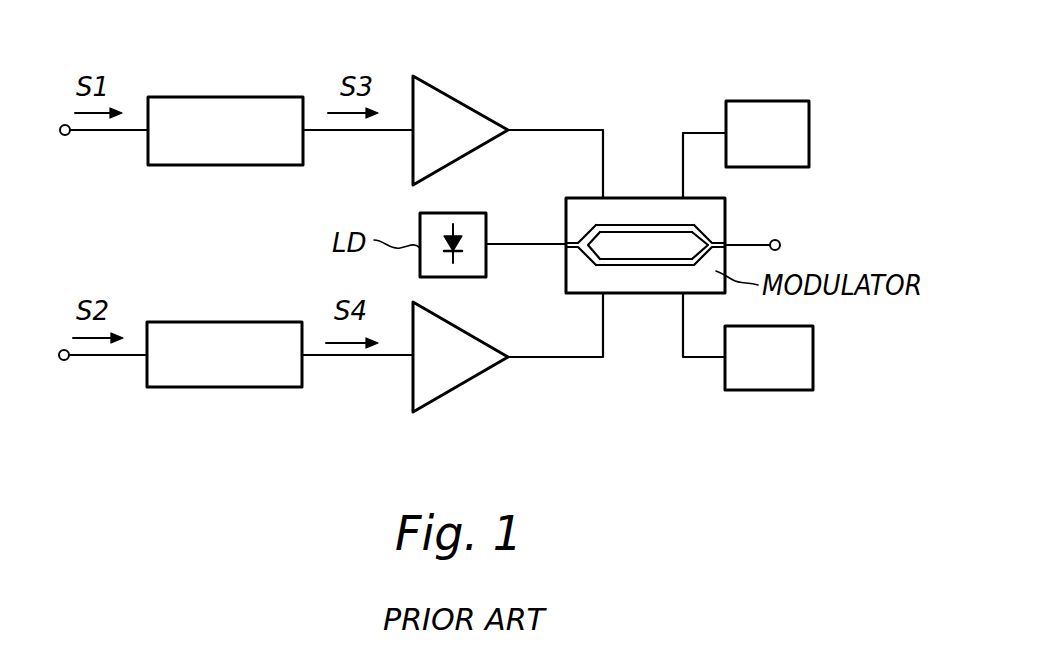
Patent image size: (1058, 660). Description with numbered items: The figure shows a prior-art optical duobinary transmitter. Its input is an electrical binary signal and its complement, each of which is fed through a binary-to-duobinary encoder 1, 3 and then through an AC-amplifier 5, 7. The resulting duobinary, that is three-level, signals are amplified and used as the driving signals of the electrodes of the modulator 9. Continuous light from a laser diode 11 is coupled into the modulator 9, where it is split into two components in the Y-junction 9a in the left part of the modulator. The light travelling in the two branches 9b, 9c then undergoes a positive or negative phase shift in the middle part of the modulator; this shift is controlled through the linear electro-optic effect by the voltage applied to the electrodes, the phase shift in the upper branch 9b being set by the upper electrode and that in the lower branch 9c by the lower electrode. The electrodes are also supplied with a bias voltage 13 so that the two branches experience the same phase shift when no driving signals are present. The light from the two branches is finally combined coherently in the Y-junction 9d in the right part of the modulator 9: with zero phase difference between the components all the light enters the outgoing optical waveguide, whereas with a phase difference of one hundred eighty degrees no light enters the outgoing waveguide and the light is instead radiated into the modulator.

The binary-to-duobinary encoder 1 is at (240, 97).
The binary-to-duobinary encoder 3 is at (225, 388).
The AC-amplifier 5 is at (440, 103).
The AC-amplifier 7 is at (458, 380).
The modulator 9 is at (680, 223).
The Y-junction 9a is at (594, 222).
The branch 9b is at (635, 225).
The branch 9c is at (644, 265).
The Y-junction 9d is at (708, 232).
The laser diode 11 is at (477, 213).
The bias voltage 13 is at (782, 101).